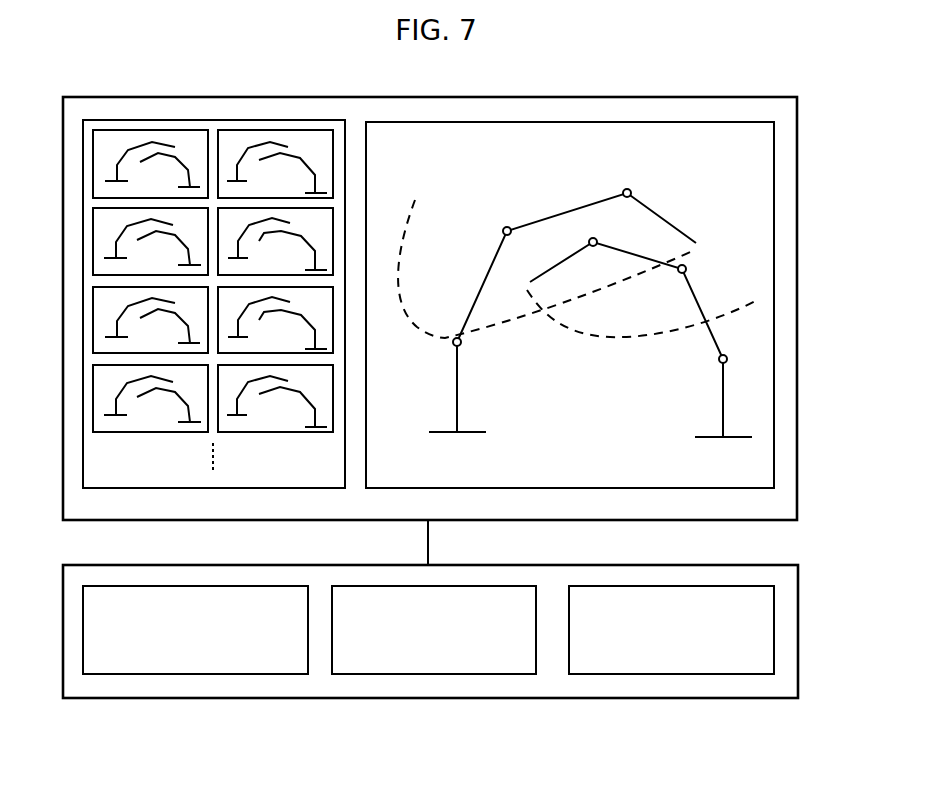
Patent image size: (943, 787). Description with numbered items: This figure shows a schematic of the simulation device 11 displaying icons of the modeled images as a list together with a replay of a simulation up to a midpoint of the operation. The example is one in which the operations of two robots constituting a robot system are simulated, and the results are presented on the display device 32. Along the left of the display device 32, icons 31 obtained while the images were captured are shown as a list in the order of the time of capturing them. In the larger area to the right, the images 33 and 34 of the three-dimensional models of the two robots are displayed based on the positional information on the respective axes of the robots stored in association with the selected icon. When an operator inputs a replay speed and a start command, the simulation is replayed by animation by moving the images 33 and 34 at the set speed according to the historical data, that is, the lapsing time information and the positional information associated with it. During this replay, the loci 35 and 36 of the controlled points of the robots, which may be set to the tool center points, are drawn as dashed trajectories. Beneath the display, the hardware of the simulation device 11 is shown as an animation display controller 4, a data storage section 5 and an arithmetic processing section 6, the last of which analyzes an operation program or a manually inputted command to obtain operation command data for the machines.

The animation display controller 4 is at (170, 674).
The data storage section 5 is at (417, 674).
The arithmetic processing section 6 is at (617, 674).
The simulation device 11 is at (717, 698).
The icons 31 is at (103, 341).
The display device 32 is at (657, 97).
The image of three-dimensional model of robot 33 is at (457, 407).
The image of three-dimensional model of robot 34 is at (723, 388).
The locus of controlled point 35 is at (413, 326).
The locus of controlled point 36 is at (748, 302).